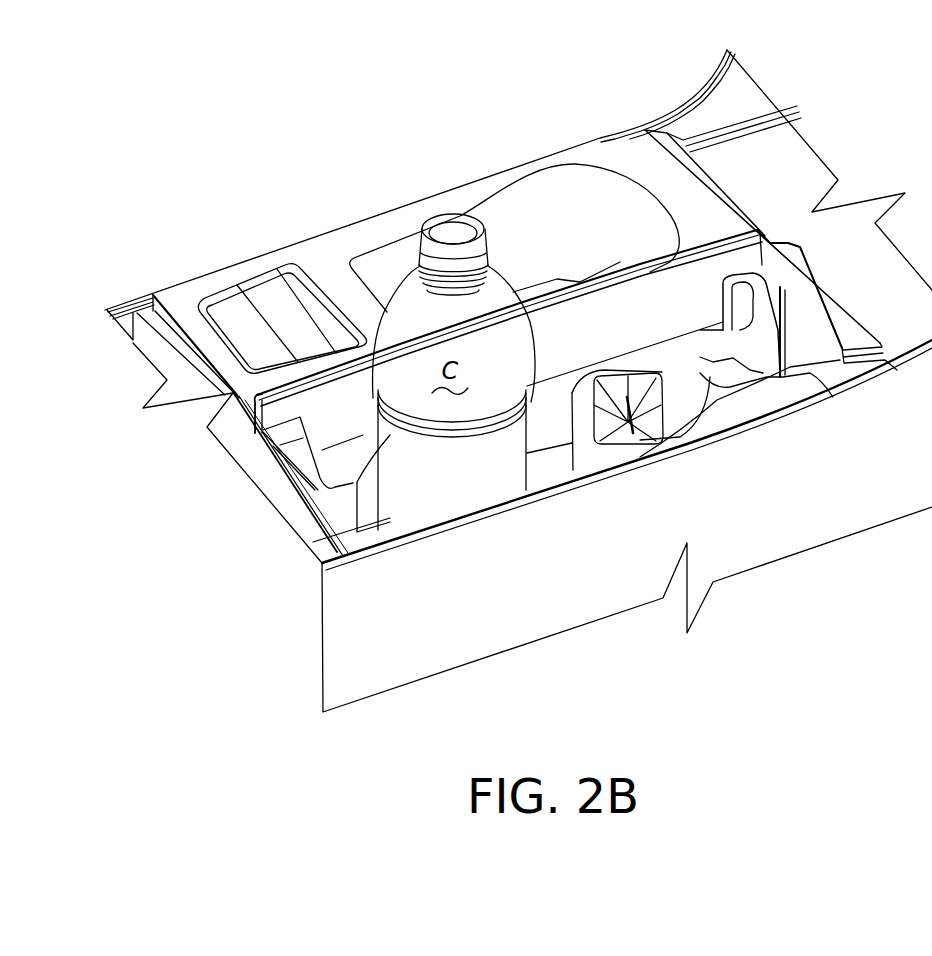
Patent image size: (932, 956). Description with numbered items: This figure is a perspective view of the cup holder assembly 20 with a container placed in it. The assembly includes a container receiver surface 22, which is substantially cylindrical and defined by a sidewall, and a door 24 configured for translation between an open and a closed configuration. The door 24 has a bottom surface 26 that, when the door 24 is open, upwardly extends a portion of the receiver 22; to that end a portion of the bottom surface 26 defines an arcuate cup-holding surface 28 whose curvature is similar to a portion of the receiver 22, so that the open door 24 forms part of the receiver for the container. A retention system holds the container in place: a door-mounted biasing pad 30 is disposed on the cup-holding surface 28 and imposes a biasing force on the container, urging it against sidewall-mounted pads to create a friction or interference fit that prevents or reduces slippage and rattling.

The cup holder assembly 20 is at (833, 243).
The container receiver surface 22 is at (688, 377).
The door 24 is at (634, 268).
The bottom surface 26 is at (813, 407).
The arcuate cup-holding surface 28 is at (657, 360).
The door-mounted biasing pad 30 is at (617, 380).